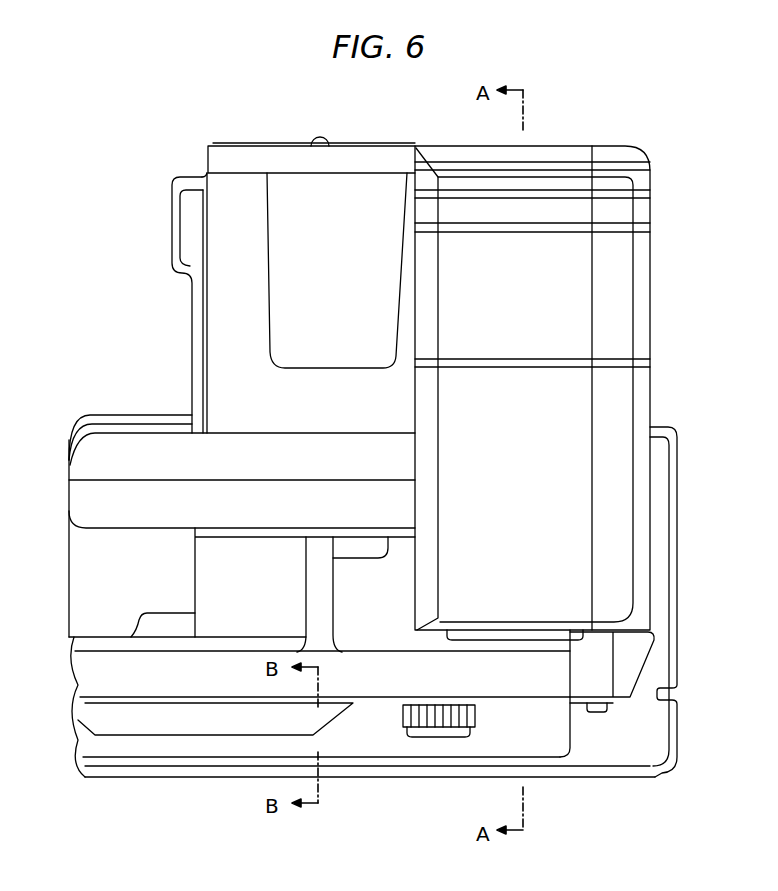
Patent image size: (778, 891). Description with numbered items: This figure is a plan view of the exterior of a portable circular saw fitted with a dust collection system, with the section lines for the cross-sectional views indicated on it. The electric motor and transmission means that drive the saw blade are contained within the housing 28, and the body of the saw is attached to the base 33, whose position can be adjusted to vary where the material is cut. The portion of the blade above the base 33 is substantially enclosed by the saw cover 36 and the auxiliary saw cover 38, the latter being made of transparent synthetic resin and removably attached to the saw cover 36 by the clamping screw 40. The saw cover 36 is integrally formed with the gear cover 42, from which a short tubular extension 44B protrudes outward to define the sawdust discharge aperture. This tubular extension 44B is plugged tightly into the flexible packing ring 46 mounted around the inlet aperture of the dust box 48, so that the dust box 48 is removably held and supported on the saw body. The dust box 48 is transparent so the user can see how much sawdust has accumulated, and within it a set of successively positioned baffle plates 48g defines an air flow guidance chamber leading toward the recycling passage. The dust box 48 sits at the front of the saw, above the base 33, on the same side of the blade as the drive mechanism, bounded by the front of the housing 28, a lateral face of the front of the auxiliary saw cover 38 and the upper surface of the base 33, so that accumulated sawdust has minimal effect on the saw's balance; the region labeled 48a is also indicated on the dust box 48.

The housing 28 is at (223, 357).
The base 33 is at (630, 753).
The saw cover 36 is at (180, 685).
The auxiliary saw cover 38 is at (227, 737).
The clamping screw 40 is at (440, 736).
The gear cover 42 is at (197, 588).
The tubular extension 44B is at (498, 647).
The packing ring 46 is at (573, 640).
The dust box 48 is at (467, 144).
The groove 48a is at (600, 362).
The baffle plates 48g is at (580, 228).